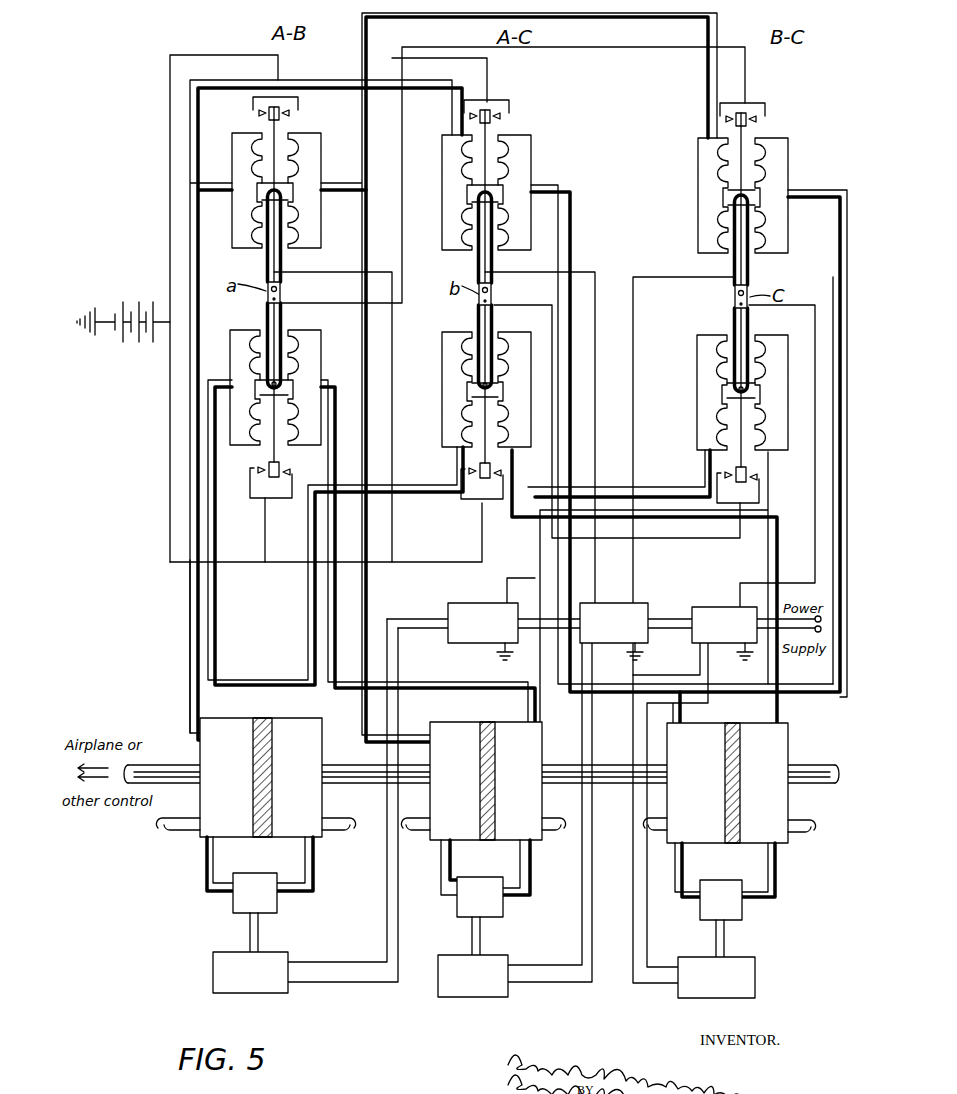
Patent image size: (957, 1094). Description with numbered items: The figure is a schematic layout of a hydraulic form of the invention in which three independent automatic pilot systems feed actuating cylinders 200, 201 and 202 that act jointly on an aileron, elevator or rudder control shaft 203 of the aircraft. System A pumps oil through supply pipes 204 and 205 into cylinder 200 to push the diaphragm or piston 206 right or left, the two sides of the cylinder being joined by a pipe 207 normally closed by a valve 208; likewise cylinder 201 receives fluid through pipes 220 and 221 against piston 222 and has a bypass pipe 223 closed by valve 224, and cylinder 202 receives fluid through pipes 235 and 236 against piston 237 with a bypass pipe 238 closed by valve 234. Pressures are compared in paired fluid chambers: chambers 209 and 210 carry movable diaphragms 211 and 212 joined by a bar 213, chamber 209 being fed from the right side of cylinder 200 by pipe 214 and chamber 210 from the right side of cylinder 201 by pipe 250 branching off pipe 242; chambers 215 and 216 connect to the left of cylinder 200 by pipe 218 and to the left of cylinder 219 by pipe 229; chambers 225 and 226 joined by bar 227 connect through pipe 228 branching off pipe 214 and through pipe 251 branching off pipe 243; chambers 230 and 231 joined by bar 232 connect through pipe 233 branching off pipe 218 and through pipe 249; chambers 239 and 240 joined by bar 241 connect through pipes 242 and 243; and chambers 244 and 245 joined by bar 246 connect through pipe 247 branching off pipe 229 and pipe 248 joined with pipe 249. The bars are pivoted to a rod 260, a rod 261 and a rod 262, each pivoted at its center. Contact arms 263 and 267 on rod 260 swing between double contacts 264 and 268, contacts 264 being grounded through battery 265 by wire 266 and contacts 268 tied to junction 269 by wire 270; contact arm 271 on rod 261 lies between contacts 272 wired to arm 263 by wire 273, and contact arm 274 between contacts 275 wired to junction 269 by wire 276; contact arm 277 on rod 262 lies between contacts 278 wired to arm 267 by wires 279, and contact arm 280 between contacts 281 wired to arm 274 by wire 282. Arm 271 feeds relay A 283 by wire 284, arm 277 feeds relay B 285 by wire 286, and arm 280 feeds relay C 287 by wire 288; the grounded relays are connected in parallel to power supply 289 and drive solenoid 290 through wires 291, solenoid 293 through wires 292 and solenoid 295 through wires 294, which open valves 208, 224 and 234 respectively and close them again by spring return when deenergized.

The actuating cylinder 200 is at (201, 808).
The actuating cylinder 201 is at (432, 810).
The actuating cylinder 202 is at (673, 746).
The control shaft 203 is at (165, 765).
The supply pipe 204 is at (181, 838).
The supply pipe 205 is at (329, 835).
The diaphragm or piston 206 is at (272, 808).
The pipe 207 is at (313, 884).
The valve 208 is at (280, 909).
The fluid chamber 209 is at (230, 331).
The fluid chamber 210 is at (303, 331).
The movable diaphragm 211 is at (254, 358).
The movable diaphragm 212 is at (291, 352).
The bar 213 is at (293, 382).
The pipe 214 is at (218, 640).
The fluid chamber 215 is at (232, 134).
The fluid chamber 216 is at (317, 133).
The pipe 218 is at (188, 640).
The cylinder 219 is at (436, 722).
The supply pipe 220 is at (427, 838).
The supply pipe 221 is at (549, 837).
The piston 222 is at (497, 760).
The pipe 223 is at (458, 848).
The valve 224 is at (505, 909).
The fluid chamber 225 is at (441, 388).
The fluid chamber 226 is at (523, 452).
The bar 227 is at (503, 394).
The pipe 228 is at (302, 665).
The pipe 229 is at (368, 452).
The fluid chamber 230 is at (460, 253).
The fluid chamber 231 is at (505, 255).
The bar 232 is at (507, 193).
The pipe 233 is at (310, 70).
The valve 234 is at (742, 906).
The supply pipe 235 is at (666, 810).
The supply pipe 236 is at (797, 840).
The piston 237 is at (745, 765).
The pipe 238 is at (778, 893).
The fluid chamber 239 is at (697, 447).
The fluid chamber 240 is at (789, 433).
The bar 241 is at (722, 389).
The pipe 242 is at (648, 489).
The pipe 243 is at (785, 678).
The chamber 244 is at (698, 190).
The chamber 245 is at (790, 173).
The bar 246 is at (722, 198).
The pipe 247 is at (578, 20).
The pipe 248 is at (837, 265).
The pipe 249 is at (577, 240).
The pipe 250 is at (424, 684).
The pipe 251 is at (527, 518).
The elongate rod 260 is at (283, 301).
The rod 261 is at (494, 306).
The rod 262 is at (737, 309).
The contact arm 263 is at (277, 153).
The double contacts 264 is at (298, 106).
The battery 265 is at (138, 347).
The wire 266 is at (170, 218).
The contact arm 267 is at (279, 459).
The double contacts 268 is at (292, 478).
The junction 269 is at (242, 565).
The wire 270 is at (265, 532).
The contact arm 271 is at (490, 132).
The double contacts 272 is at (509, 112).
The wire 273 is at (310, 273).
The contact arm 274 is at (470, 421).
The double contacts 275 is at (470, 503).
The wire 276 is at (376, 562).
The contact arm 277 is at (749, 134).
The double contacts 278 is at (766, 112).
The wires 279 is at (683, 52).
The contact arm 280 is at (723, 423).
The double contacts 281 is at (758, 481).
The wire 282 is at (552, 308).
The relay A 283 is at (490, 603).
The wire 284 is at (582, 273).
The relay B 285 is at (627, 603).
The wire 286 is at (683, 277).
The relay C 287 is at (732, 607).
The wire 288 is at (762, 583).
The power supply 289 is at (672, 618).
The solenoid 290 is at (213, 985).
The wires 291 is at (316, 983).
The wires 292 is at (527, 983).
The solenoid 293 is at (436, 988).
The wires 294 is at (633, 950).
The solenoid 295 is at (762, 983).